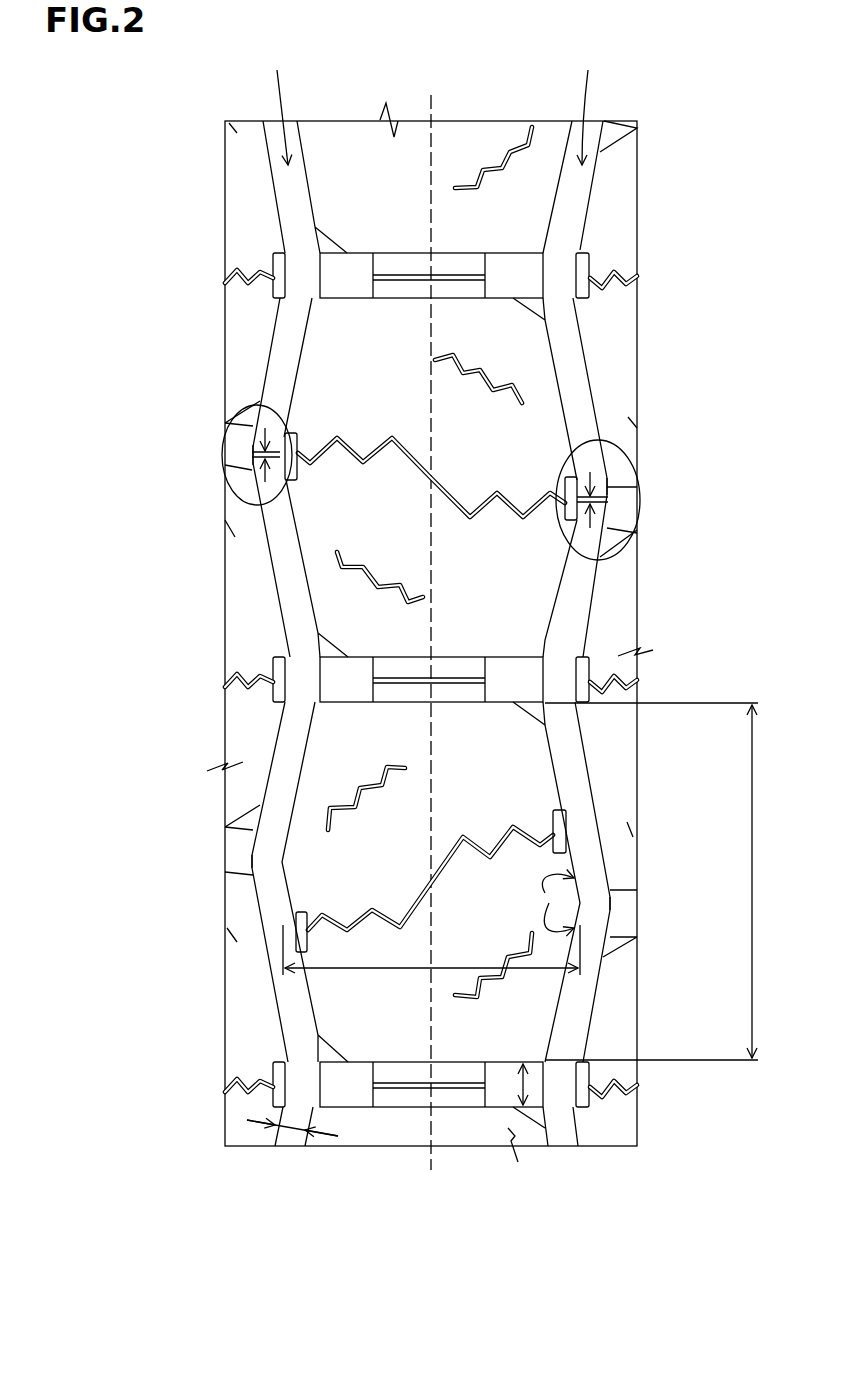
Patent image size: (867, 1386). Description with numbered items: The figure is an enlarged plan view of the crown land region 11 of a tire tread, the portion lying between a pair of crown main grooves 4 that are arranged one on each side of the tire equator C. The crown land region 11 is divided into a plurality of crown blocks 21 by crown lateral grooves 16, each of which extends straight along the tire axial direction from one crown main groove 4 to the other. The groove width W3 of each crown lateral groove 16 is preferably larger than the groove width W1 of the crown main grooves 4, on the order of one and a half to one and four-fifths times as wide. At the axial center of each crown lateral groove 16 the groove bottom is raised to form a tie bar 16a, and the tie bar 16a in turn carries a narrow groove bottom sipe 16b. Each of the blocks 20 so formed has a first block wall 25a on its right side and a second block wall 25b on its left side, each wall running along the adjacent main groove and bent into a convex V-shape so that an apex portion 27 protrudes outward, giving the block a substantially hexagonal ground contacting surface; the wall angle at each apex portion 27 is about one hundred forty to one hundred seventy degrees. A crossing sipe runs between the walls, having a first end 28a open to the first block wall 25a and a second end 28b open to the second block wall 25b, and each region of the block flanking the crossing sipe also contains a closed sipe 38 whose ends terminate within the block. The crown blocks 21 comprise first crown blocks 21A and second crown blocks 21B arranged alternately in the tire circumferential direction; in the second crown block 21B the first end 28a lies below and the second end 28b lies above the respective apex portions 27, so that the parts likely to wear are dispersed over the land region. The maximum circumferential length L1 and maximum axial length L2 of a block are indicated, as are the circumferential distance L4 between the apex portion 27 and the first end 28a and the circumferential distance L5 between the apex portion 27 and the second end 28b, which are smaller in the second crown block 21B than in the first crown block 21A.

The crown main groove 4 is at (432, 104).
The crown land region 11 is at (466, 147).
The tire equator C is at (430, 619).
The crown lateral groove 16 is at (492, 717).
The tie bar 16a is at (460, 1097).
The groove bottom sipe 16b is at (408, 1085).
The block 20 is at (380, 667).
The crown block 21 is at (136, 612).
The first crown block 21A is at (405, 817).
The second crown block 21B is at (400, 543).
The first block wall 25a is at (565, 395).
The second block wall 25b is at (300, 353).
The apex portion 27 is at (262, 498).
The first end 28a is at (595, 560).
The second end 28b is at (255, 432).
The closed sipe 38 is at (490, 378).
The maximum length in the tire circumferential direction of the block L1 is at (670, 881).
The maximum length in the tire axial direction of the block L2 is at (431, 963).
The distance between the apex portion and the first end L4 is at (590, 500).
The distance between the apex portion and the second end L5 is at (262, 455).
The groove width of the crown main groove W1 is at (293, 1125).
The groove width of the crown lateral groove W3 is at (530, 1080).